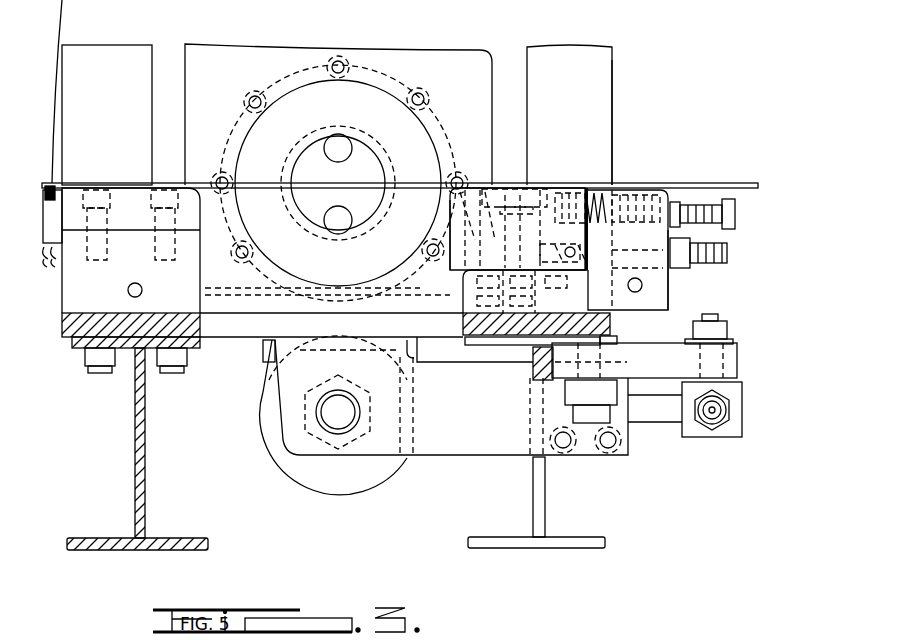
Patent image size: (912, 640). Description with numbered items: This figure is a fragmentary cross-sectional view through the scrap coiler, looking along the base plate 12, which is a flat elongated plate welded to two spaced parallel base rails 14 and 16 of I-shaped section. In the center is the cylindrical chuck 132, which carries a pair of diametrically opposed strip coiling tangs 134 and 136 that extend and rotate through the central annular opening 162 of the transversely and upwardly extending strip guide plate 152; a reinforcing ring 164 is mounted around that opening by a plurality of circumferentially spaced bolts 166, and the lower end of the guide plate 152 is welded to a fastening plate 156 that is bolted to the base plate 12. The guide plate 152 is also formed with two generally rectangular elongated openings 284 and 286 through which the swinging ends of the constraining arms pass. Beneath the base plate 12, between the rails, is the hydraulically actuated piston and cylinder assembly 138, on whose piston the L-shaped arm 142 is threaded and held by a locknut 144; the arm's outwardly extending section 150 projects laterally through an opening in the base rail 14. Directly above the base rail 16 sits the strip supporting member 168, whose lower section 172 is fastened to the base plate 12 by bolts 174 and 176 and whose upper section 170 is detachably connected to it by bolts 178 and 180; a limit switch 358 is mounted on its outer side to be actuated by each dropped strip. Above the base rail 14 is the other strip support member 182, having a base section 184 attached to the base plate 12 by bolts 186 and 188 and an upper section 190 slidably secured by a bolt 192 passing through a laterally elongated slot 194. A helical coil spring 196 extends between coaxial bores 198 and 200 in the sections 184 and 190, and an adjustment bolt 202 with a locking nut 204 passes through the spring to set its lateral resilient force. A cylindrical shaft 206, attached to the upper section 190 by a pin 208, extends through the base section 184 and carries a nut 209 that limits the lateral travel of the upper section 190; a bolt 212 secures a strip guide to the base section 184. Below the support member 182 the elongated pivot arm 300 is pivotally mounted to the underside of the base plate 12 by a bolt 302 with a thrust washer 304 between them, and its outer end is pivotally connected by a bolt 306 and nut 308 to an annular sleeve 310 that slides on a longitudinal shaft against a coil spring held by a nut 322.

The base plate 12 is at (249, 341).
The base rail 14 is at (550, 497).
The base rail 16 is at (149, 497).
The chuck 132 is at (371, 132).
The tang 134 is at (322, 146).
The tang 136 is at (363, 220).
The piston and cylinder assembly 138 is at (352, 493).
The arm 142 is at (493, 459).
The locknut 144 is at (371, 417).
The outwardly extending section 150 is at (621, 421).
The strip guide plate 152 is at (621, 66).
The fastening plate 156 is at (227, 313).
The annular opening 162 is at (417, 131).
The reinforcing ring 164 is at (277, 70).
The bolts 166 is at (426, 87).
The strip supporting member 168 is at (60, 315).
The upper section 170 is at (118, 192).
The lower section 172 is at (187, 273).
The bolt 174 is at (101, 376).
The bolt 176 is at (169, 376).
The bolt 178 is at (85, 253).
The bolt 180 is at (155, 253).
The strip support member 182 is at (675, 275).
The base section 184 is at (663, 288).
The bolt 186 is at (469, 300).
The bolt 188 is at (542, 303).
The upper section 190 is at (557, 188).
The bolt 192 is at (514, 182).
The slot 194 is at (462, 220).
The helical coil spring 196 is at (591, 192).
The bore 198 is at (640, 170).
The bore 200 is at (560, 233).
The adjustment bolt 202 is at (744, 198).
The locking nut 204 is at (684, 195).
The cylindrical shaft 206 is at (736, 250).
The pin 208 is at (579, 252).
The nut 209 is at (698, 237).
The bolt 212 is at (644, 295).
The opening 284 is at (507, 68).
The opening 286 is at (172, 62).
The pivot arm 300 is at (743, 363).
The bolt 302 is at (605, 353).
The thrust washer 304 is at (609, 343).
The bolt 306 is at (724, 313).
The nut 308 is at (730, 327).
The annular sleeve 310 is at (751, 421).
The nut 322 is at (727, 423).
The limit switch 358 is at (63, 212).